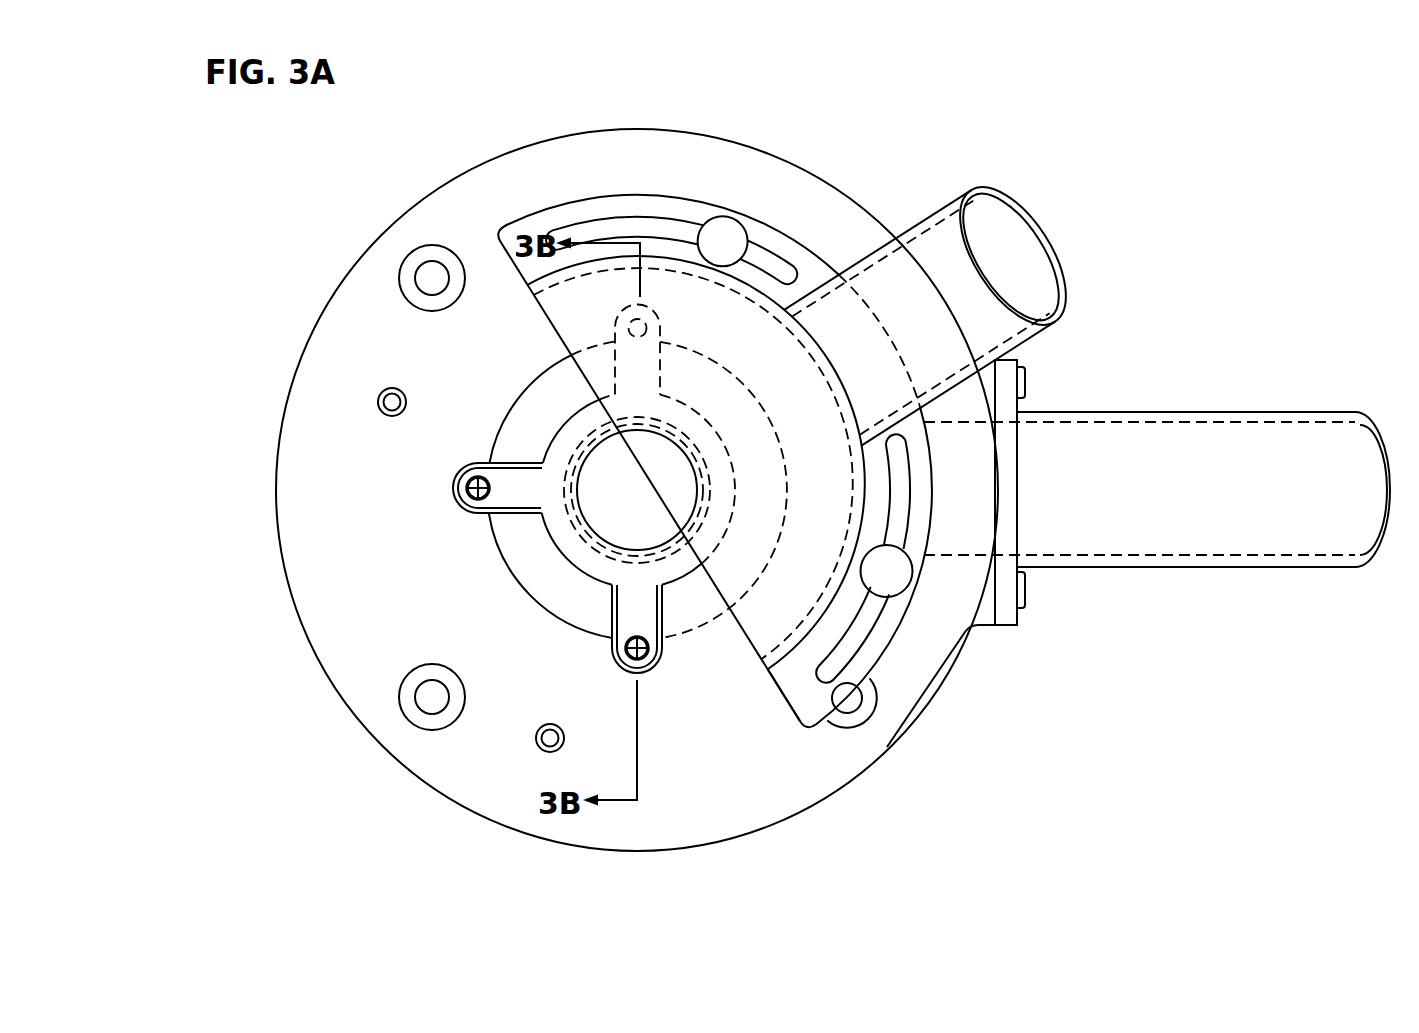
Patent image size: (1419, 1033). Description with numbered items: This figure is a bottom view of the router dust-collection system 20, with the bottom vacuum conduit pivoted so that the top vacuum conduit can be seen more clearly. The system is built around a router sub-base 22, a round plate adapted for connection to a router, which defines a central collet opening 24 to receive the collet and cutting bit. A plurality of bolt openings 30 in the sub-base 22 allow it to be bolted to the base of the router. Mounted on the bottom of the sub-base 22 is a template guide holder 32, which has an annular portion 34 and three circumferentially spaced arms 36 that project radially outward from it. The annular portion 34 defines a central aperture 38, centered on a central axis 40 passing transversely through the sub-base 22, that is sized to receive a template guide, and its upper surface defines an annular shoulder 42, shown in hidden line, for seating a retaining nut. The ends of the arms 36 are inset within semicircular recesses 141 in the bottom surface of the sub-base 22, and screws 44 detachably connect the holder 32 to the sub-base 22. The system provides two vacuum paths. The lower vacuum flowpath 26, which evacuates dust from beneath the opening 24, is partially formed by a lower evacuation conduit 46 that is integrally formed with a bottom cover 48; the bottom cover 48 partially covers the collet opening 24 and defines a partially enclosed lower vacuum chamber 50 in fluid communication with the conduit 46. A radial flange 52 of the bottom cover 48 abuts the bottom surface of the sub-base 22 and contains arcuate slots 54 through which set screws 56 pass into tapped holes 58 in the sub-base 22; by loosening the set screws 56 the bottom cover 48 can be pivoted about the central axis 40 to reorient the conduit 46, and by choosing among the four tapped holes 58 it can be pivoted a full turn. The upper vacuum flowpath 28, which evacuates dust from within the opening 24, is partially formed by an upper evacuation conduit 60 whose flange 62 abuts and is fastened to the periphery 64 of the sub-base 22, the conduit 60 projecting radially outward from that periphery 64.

The router dust-collection system 20 is at (1214, 204).
The router sub-base 22 is at (775, 830).
The central collet opening 24 is at (507, 563).
The lower vacuum flowpath 26 is at (920, 222).
The upper vacuum flowpath 28 is at (1208, 410).
The bolt openings 30 is at (415, 272).
The template guide holder 32 is at (600, 607).
The annular portion 34 is at (677, 565).
The arms 36 is at (660, 627).
The central aperture 38 is at (583, 467).
The central axis 40 is at (637, 490).
The annular shoulder 42 is at (597, 440).
The screws 44 is at (468, 499).
The lower evacuation conduit 46 is at (977, 185).
The bottom cover 48 is at (784, 668).
The lower vacuum chamber 50 is at (563, 302).
The radial flange 52 is at (577, 198).
The arcuate slots 54 is at (655, 215).
The set screws 56 is at (738, 213).
The tapped holes 58 is at (378, 402).
The upper evacuation conduit 60 is at (1307, 412).
The flange 62 is at (1005, 363).
The periphery 64 is at (895, 745).
The semicircular recesses 141 is at (470, 472).